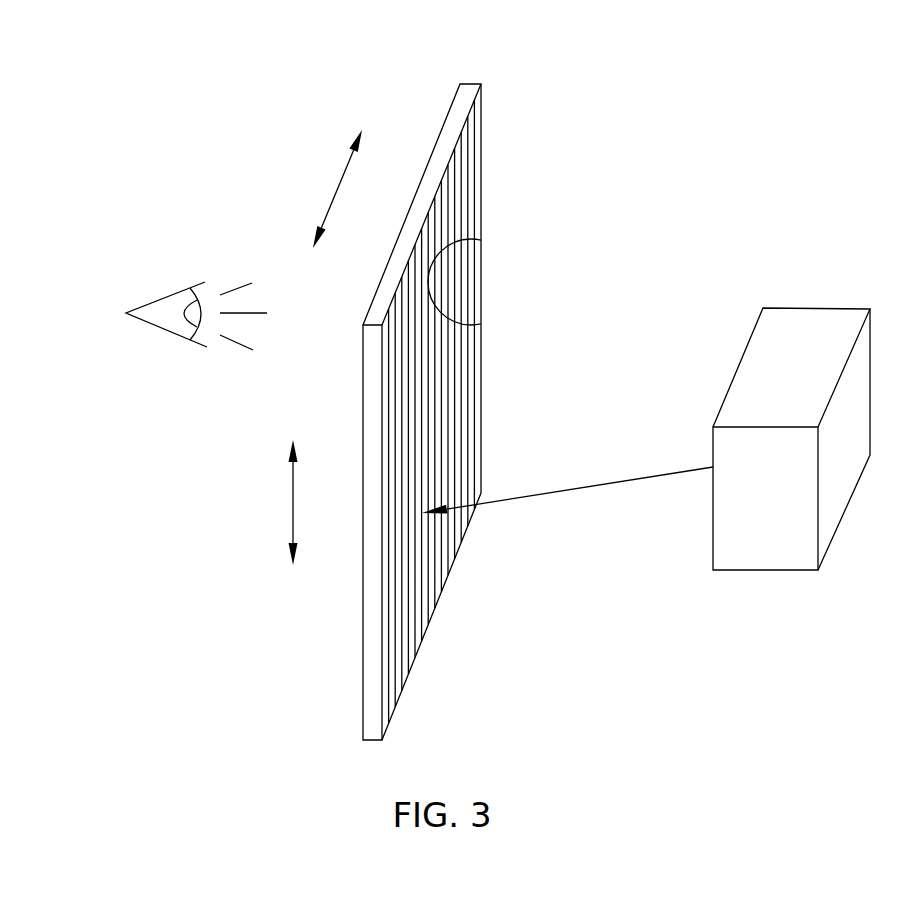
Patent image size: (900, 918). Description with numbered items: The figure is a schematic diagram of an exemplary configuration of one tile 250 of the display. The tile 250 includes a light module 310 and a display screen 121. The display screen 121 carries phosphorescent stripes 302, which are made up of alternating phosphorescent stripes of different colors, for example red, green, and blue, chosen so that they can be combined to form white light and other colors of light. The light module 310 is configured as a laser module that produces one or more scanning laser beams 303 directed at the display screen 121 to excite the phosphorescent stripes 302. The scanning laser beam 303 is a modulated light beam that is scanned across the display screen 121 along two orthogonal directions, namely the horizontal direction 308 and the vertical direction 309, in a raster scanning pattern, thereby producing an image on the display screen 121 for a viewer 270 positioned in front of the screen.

The tile 250 is at (719, 92).
The display screen 121 is at (363, 655).
The phosphorescent stripes 302 is at (425, 552).
The scanning laser beam 303 is at (583, 483).
The light module 310 is at (787, 498).
The viewer 270 is at (167, 330).
The horizontal direction 308 is at (335, 188).
The vertical direction 309 is at (293, 503).